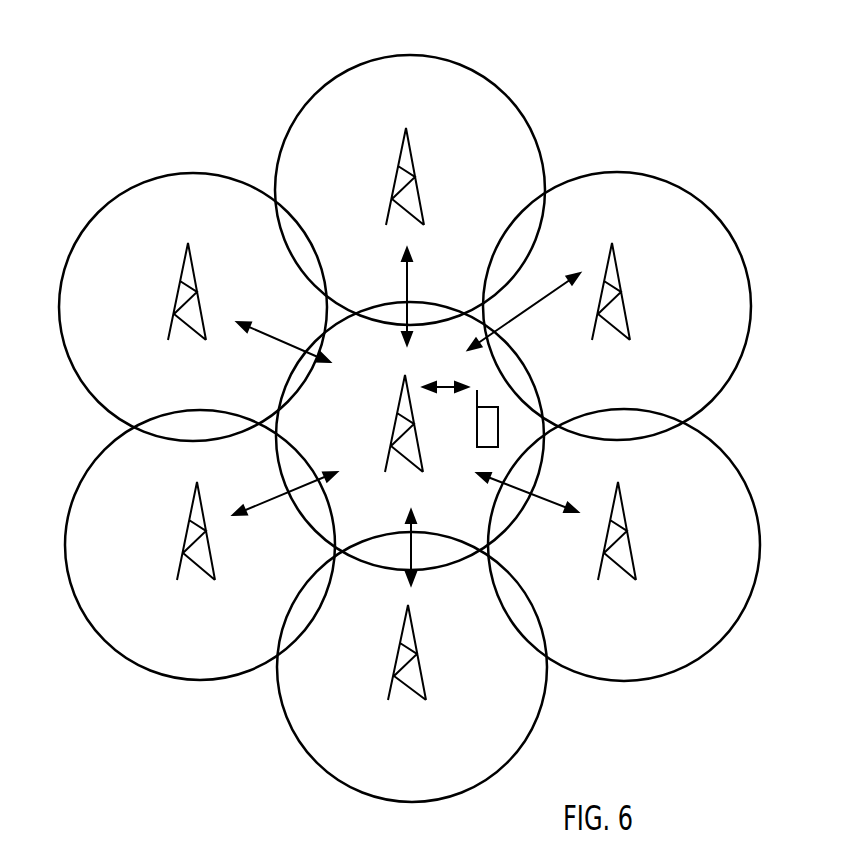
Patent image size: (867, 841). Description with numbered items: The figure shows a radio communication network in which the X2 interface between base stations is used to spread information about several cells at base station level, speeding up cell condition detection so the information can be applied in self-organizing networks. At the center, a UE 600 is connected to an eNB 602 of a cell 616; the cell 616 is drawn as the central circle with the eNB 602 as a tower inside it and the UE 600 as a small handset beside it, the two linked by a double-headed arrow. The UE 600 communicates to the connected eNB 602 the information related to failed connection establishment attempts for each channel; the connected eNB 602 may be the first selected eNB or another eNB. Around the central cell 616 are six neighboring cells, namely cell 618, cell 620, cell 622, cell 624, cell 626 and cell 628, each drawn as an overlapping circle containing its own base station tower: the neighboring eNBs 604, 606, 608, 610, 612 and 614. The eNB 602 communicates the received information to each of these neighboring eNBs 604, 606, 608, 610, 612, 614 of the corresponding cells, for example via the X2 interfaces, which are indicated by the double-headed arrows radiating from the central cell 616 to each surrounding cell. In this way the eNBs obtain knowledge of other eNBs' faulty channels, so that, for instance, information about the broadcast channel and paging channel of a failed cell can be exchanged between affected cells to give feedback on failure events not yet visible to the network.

The UE 600 is at (478, 438).
The eNB 602 is at (396, 428).
The neighboring eNB 604 is at (636, 573).
The neighboring eNB 606 is at (631, 331).
The neighboring eNB 608 is at (421, 194).
The neighboring eNB 610 is at (175, 302).
The neighboring eNB 612 is at (185, 545).
The neighboring eNB 614 is at (426, 697).
The cell 616 is at (390, 508).
The neighboring cell 618 is at (726, 458).
The neighboring cell 620 is at (699, 194).
The neighboring cell 622 is at (348, 68).
The neighboring cell 624 is at (58, 288).
The neighboring cell 626 is at (83, 608).
The neighboring cell 628 is at (543, 714).